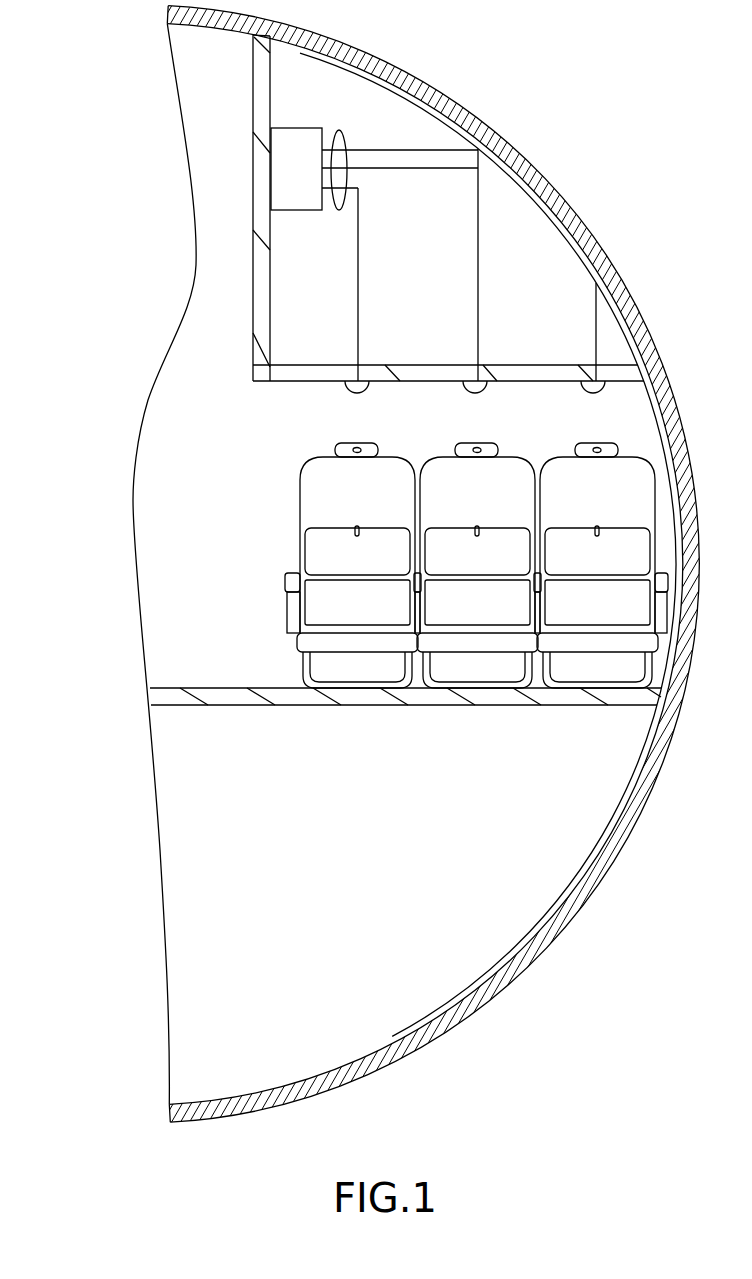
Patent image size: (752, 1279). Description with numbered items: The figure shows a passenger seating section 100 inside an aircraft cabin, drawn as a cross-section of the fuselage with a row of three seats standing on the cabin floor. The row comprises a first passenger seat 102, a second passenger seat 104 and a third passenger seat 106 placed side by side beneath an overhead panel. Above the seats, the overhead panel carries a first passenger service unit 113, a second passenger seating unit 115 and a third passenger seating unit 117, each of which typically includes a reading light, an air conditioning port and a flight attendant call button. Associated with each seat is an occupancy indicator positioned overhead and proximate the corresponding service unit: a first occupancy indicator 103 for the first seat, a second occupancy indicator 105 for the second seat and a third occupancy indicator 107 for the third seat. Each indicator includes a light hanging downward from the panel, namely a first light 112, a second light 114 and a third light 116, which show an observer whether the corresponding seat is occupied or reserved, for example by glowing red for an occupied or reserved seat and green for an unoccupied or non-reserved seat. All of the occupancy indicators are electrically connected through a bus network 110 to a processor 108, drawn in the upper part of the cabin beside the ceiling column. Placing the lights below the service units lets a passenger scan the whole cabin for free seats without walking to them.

The passenger seating section 100 is at (208, 478).
The first passenger seat 102 is at (340, 507).
The second passenger seat 104 is at (460, 507).
The third passenger seat 106 is at (580, 507).
The first occupancy indicator 103 is at (346, 381).
The second occupancy indicator 105 is at (463, 381).
The third occupancy indicator 107 is at (574, 382).
The processor 108 is at (300, 128).
The bus network 110 is at (347, 137).
The first light 112 is at (368, 390).
The second light 114 is at (487, 390).
The third light 116 is at (606, 389).
The first passenger service unit 113 is at (374, 368).
The second passenger seating unit 115 is at (484, 369).
The third passenger seating unit 117 is at (573, 396).